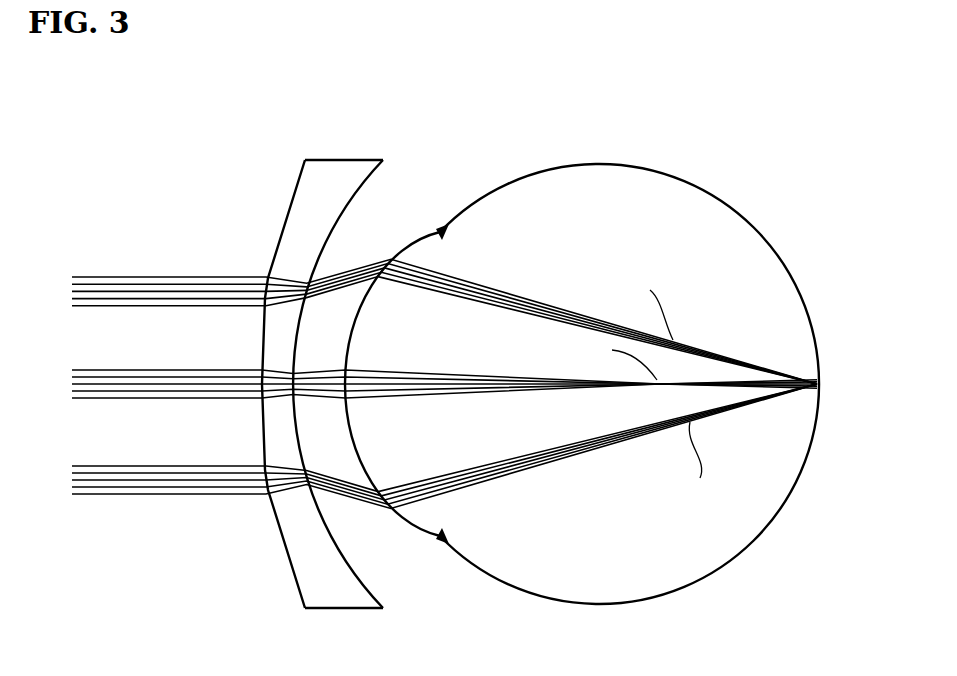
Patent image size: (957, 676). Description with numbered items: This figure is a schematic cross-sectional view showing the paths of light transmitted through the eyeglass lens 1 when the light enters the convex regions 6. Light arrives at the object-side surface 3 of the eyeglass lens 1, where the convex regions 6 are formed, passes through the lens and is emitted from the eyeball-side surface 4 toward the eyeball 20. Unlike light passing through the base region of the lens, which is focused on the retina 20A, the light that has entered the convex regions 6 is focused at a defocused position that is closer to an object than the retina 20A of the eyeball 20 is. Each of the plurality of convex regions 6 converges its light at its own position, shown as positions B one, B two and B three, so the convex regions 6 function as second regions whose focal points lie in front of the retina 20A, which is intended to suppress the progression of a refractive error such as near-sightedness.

The eyeglass lens 1 is at (376, 147).
The object-side surface 3 is at (282, 268).
The eyeball-side surface 4 is at (345, 211).
The convex regions 6 is at (262, 303).
The eyeball 20 is at (741, 151).
The retina 20A is at (775, 250).